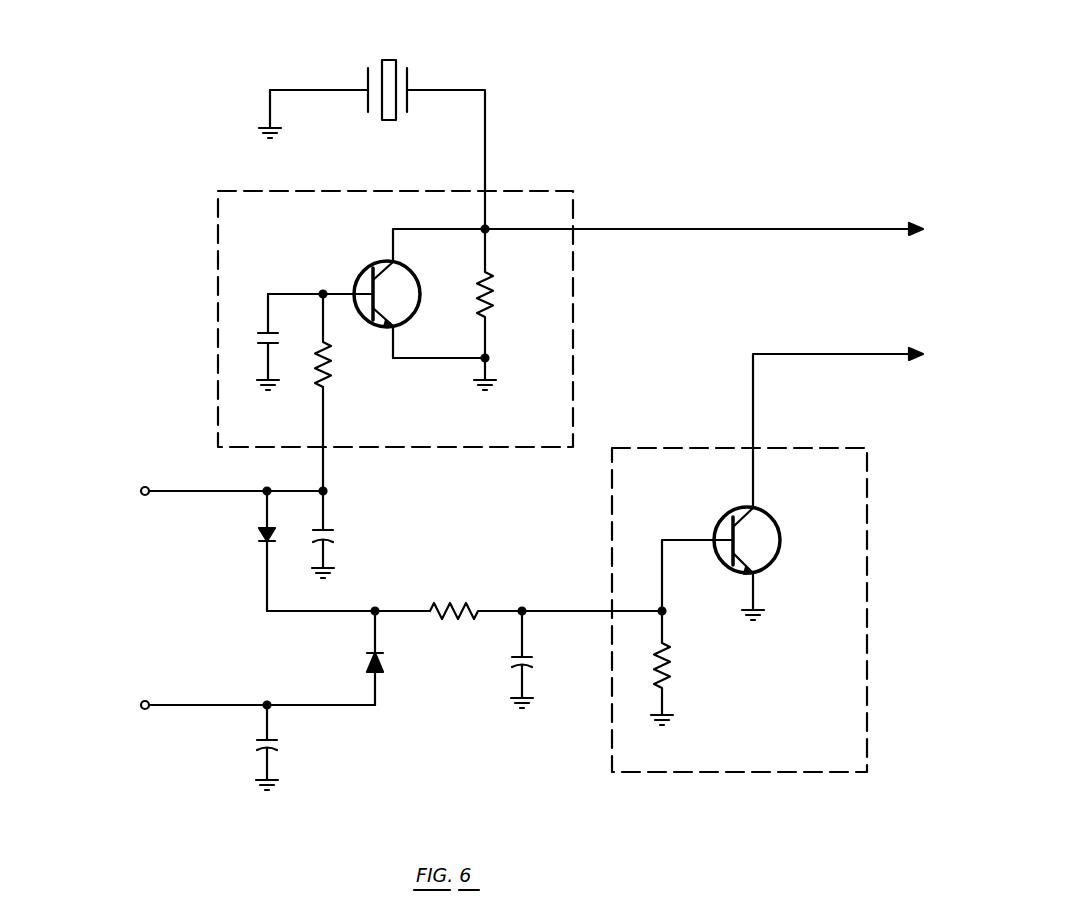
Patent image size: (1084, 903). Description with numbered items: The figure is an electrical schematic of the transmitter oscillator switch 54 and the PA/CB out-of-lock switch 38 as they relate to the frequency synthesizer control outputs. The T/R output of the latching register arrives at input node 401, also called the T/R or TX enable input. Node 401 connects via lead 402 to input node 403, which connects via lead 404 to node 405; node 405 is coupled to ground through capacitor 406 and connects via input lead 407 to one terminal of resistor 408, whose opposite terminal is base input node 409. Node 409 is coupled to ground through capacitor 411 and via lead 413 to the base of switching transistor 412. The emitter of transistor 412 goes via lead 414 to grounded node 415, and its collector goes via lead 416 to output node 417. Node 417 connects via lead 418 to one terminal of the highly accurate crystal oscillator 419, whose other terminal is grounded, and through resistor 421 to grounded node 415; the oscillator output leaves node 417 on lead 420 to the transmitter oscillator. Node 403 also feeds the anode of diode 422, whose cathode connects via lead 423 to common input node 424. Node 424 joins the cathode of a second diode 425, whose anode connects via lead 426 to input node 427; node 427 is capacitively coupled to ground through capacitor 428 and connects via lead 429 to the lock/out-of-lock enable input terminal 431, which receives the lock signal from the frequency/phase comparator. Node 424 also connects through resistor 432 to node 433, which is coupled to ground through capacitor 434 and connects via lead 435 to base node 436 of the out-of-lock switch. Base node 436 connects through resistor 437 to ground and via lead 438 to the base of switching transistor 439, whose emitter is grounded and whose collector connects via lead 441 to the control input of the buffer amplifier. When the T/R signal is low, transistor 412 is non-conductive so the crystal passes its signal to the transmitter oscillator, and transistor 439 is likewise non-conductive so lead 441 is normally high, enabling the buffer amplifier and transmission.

The transmitter oscillator switch 54 is at (233, 190).
The PA/CB out-of-lock switch 38 is at (830, 447).
The input node 401 is at (141, 491).
The lead 402 is at (222, 491).
The input node 403 is at (268, 490).
The lead 404 is at (294, 491).
The node 405 is at (327, 491).
The capacitor 406 is at (333, 541).
The input lead 407 is at (325, 397).
The resistor 408 is at (335, 361).
The base input node 409 is at (323, 294).
The capacitor 411 is at (262, 333).
The switching transistor 412 is at (370, 263).
The lead 413 is at (343, 290).
The lead 414 is at (445, 358).
The grounded node 415 is at (490, 358).
The lead 416 is at (438, 229).
The output node 417 is at (488, 228).
The lead 418 is at (452, 90).
The crystal oscillator 419 is at (377, 56).
The lead 420 is at (653, 228).
The resistor 421 is at (490, 288).
The diode 422 is at (262, 535).
The lead 423 is at (325, 613).
The common input node 424 is at (375, 610).
The diode 425 is at (380, 670).
The lead 426 is at (343, 707).
The input node 427 is at (267, 705).
The capacitor 428 is at (273, 750).
The lead 429 is at (233, 705).
The lock/out-of-lock enable input terminal 431 is at (141, 705).
The resistor 432 is at (470, 600).
The node 433 is at (522, 608).
The capacitor 434 is at (510, 656).
The lead 435 is at (557, 613).
The base node 436 is at (667, 611).
The resistor 437 is at (672, 662).
The lead 438 is at (678, 540).
The switching transistor 439 is at (772, 512).
The lead 441 is at (753, 386).